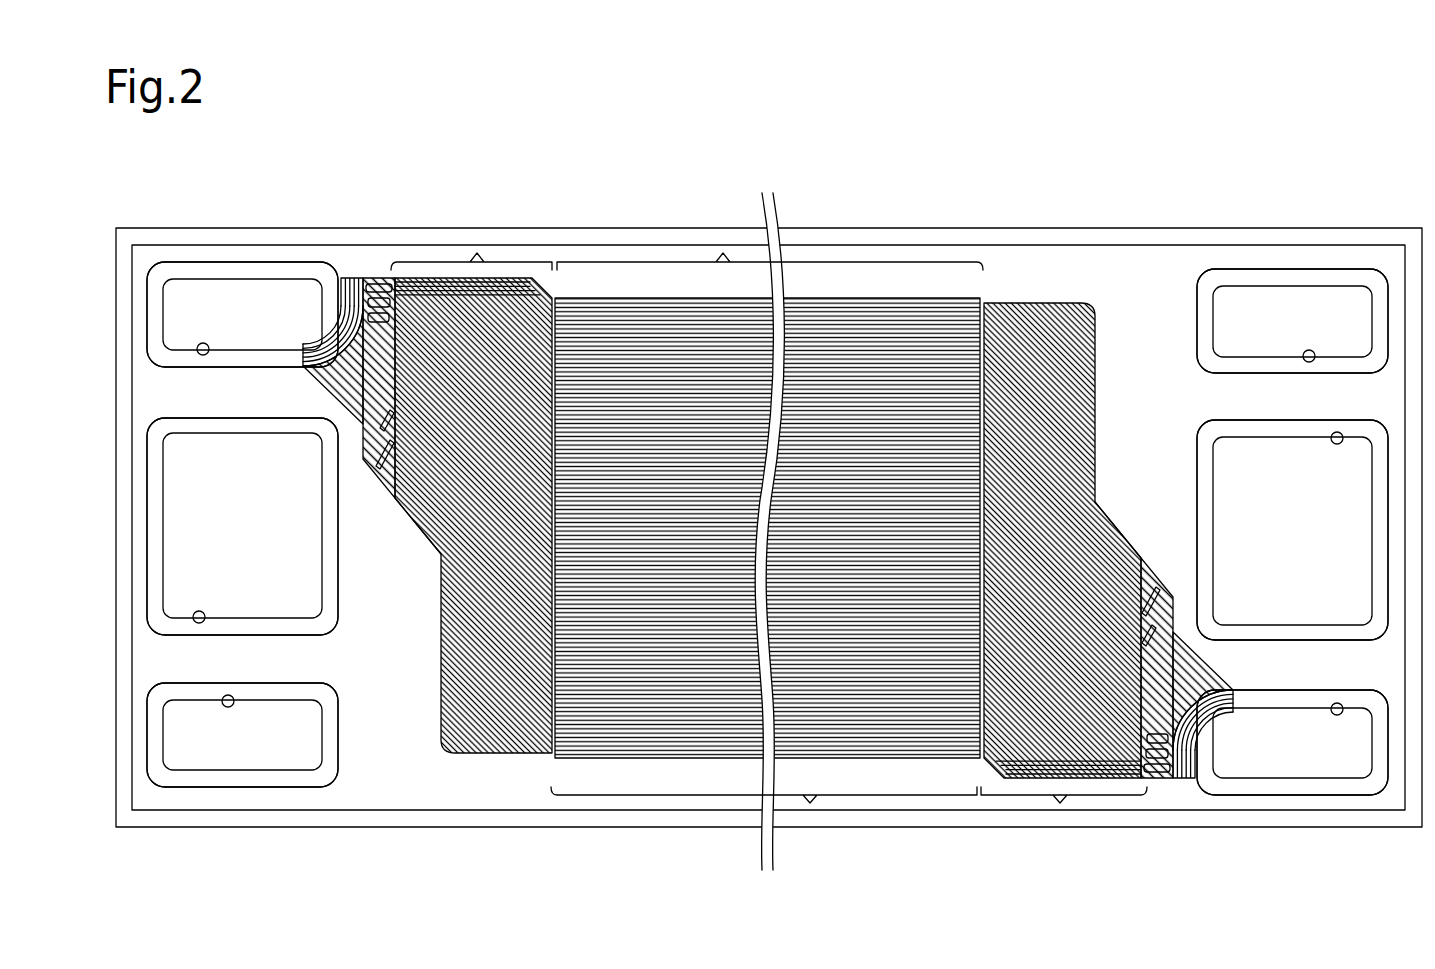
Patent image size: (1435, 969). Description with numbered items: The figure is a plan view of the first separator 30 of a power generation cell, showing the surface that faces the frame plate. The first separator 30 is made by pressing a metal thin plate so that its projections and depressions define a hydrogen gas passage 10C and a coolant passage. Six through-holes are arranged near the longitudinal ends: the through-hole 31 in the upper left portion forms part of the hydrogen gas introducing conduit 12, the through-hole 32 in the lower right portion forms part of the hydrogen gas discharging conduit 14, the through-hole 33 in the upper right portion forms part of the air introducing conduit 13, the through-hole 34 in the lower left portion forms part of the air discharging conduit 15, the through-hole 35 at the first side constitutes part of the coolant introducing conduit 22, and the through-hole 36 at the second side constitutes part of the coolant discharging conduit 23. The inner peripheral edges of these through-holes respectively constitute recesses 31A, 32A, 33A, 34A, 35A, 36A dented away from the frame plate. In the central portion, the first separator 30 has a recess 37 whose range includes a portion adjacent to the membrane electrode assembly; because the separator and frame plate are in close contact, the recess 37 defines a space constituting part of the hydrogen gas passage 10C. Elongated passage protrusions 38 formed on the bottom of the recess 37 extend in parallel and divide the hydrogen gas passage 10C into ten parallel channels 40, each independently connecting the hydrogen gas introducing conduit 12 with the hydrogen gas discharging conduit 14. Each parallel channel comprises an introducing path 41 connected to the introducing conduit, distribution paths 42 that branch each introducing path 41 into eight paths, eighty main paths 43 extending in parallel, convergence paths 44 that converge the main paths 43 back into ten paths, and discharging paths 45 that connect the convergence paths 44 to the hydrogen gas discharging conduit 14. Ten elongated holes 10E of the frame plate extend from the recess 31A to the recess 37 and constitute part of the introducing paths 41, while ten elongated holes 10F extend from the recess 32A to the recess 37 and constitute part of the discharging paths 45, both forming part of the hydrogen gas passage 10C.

The first separator 30 is at (1400, 187).
The hydrogen gas introducing conduit 12 is at (215, 330).
The air introducing conduit 13 is at (1310, 335).
The hydrogen gas discharging conduit 14 is at (1348, 765).
The air discharging conduit 15 is at (258, 757).
The coolant introducing conduit 22 is at (260, 545).
The coolant discharging conduit 23 is at (1310, 548).
The through-hole 31 is at (198, 356).
The recess 31A is at (199, 262).
The through-hole 32 is at (1338, 703).
The recess 32A is at (1337, 796).
The through-hole 33 is at (1307, 362).
The recess 33A is at (1270, 373).
The through-hole 34 is at (230, 695).
The recess 34A is at (268, 690).
The through-hole 35 is at (198, 624).
The recess 35A is at (210, 419).
The through-hole 36 is at (1340, 432).
The recess 36A is at (1327, 641).
The recess 37 is at (1032, 300).
The passage protrusions 38 is at (457, 625).
The parallel channels 40 is at (350, 412).
The introducing paths 41 is at (350, 278).
The distribution paths 42 is at (477, 253).
The main paths 43 is at (723, 253).
The convergence paths 44 is at (1060, 803).
The discharging paths 45 is at (1187, 786).
The hydrogen gas passage 10C is at (903, 333).
The elongated holes 10E is at (322, 311).
The elongated holes 10F is at (1227, 723).